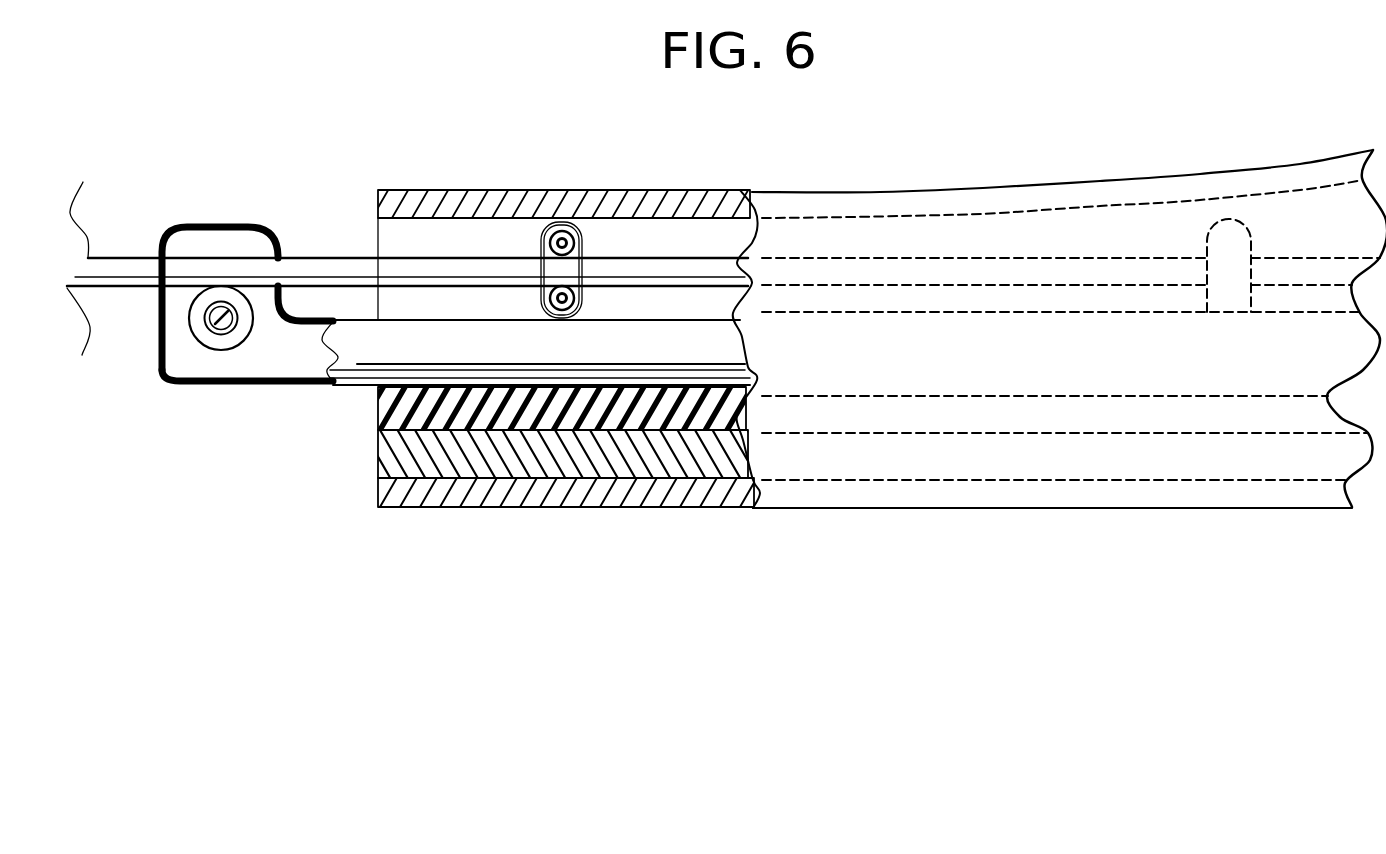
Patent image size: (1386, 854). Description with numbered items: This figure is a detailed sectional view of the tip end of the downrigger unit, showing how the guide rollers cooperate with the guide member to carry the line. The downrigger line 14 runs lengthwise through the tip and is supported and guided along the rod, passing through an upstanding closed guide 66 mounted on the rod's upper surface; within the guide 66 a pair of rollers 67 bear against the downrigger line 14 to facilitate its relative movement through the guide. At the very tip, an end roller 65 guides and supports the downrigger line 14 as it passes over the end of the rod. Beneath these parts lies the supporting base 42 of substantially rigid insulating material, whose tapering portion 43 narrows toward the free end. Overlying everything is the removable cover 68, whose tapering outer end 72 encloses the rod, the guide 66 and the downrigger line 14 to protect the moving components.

The downrigger line 14 is at (135, 258).
The supporting base 42 is at (620, 412).
The tapering portion 43 is at (497, 460).
The end roller 65 is at (223, 338).
The closed guides 66 is at (577, 227).
The rollers 67 is at (558, 223).
The cover 68 is at (1153, 183).
The tapering outer end 72 is at (452, 192).